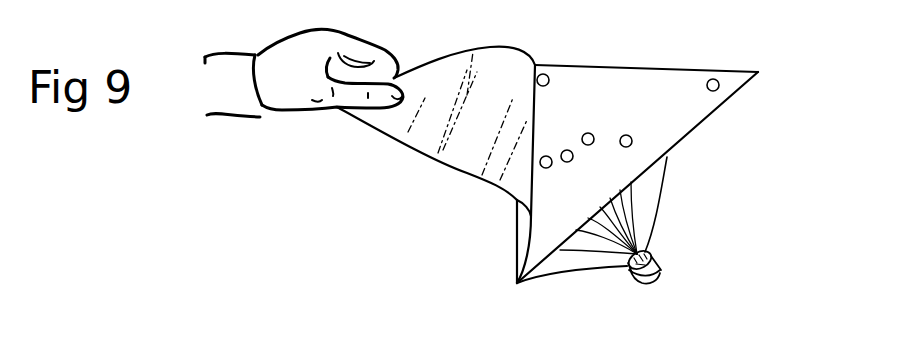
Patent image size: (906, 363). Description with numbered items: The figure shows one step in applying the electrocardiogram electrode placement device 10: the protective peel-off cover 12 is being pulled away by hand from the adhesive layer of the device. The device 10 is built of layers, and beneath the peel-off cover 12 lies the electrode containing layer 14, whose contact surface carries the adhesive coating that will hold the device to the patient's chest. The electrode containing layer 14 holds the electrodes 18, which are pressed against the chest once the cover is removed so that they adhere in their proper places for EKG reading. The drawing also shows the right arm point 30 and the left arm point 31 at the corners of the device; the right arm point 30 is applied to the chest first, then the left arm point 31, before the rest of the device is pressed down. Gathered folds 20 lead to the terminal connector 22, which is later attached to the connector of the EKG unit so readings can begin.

The electrocardiogram (EKG) electrode placement device 10 is at (792, 299).
The peel-off protective cover 12 is at (464, 150).
The electrode containing layer 14 is at (662, 138).
The electrodes 18 is at (607, 98).
The gathered folds 20 is at (647, 212).
The terminal connector 22 is at (657, 263).
The right arm point 30 is at (715, 78).
The left arm point 31 is at (540, 73).